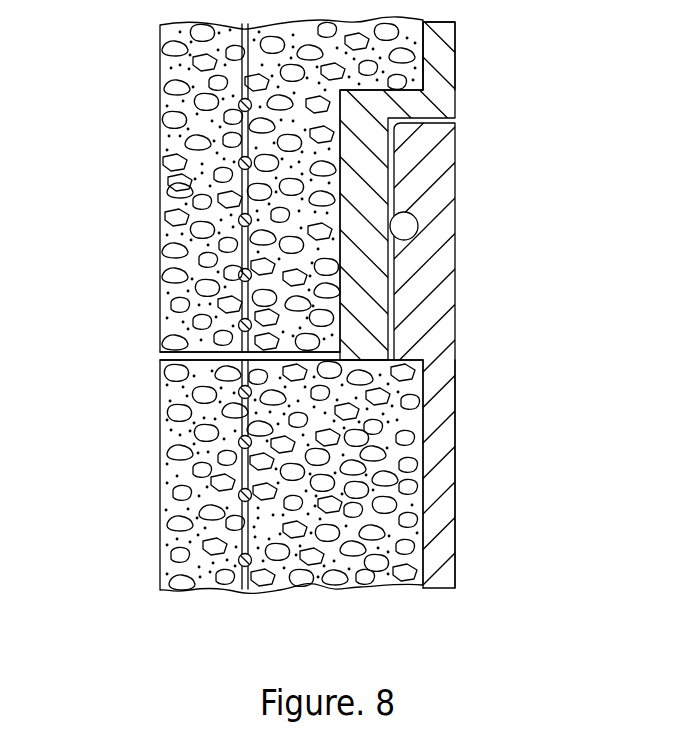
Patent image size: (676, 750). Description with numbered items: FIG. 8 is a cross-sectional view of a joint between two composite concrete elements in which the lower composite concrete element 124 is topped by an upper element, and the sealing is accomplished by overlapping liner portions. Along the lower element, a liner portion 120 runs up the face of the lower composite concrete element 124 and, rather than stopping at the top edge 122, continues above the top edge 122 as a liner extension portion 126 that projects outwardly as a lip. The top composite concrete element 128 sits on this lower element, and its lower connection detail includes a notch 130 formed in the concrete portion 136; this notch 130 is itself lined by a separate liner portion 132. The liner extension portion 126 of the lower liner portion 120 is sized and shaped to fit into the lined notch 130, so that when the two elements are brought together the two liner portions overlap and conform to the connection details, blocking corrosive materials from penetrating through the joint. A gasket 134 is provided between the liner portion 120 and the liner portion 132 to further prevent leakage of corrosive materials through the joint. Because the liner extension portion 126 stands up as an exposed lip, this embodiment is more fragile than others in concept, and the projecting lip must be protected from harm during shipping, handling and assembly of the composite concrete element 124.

The liner portion 120 is at (442, 468).
The top edge 122 is at (185, 375).
The lower composite concrete element 124 is at (185, 513).
The liner extension portion 126 is at (437, 295).
The top composite concrete element 128 is at (177, 175).
The notch 130 is at (421, 64).
The liner portion 132 is at (445, 78).
The gasket 134 is at (414, 222).
The concrete portion 136 is at (177, 70).